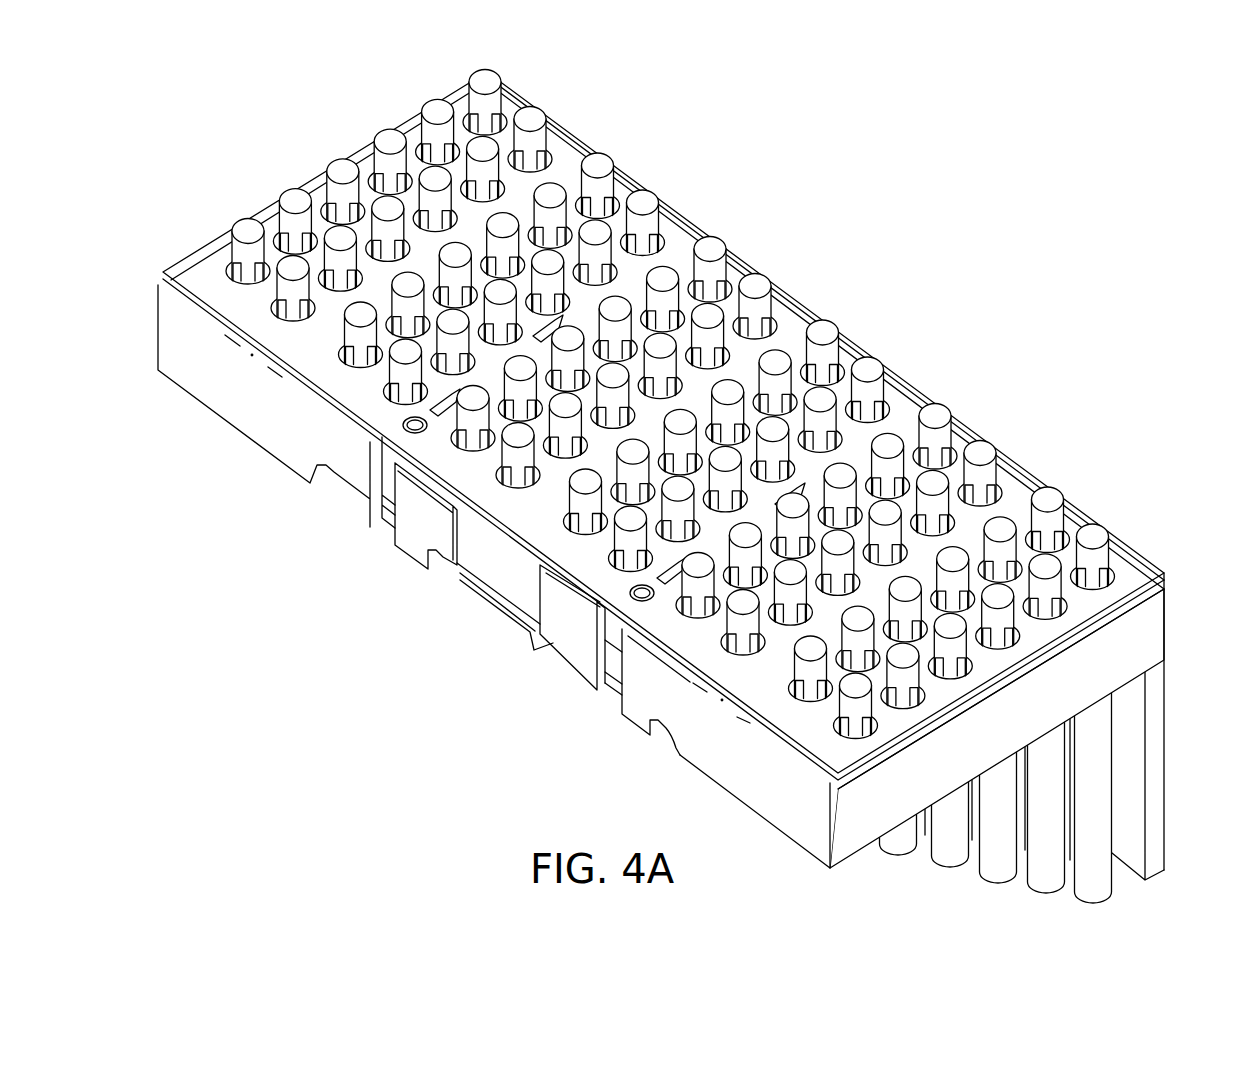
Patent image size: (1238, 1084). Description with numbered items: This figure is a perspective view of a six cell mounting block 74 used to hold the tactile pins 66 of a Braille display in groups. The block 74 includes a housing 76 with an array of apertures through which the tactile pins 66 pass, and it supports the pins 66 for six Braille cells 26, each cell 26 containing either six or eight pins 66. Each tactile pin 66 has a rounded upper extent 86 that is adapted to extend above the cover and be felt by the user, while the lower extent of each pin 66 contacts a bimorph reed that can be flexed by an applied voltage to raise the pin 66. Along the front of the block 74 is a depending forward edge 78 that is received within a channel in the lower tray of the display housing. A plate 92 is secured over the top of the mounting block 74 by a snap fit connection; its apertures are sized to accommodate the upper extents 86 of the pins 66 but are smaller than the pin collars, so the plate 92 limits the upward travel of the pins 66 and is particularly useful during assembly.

The mounting block 74 is at (691, 487).
The Braille cell 26 is at (716, 403).
The rounded upper extent 86 is at (485, 84).
The housing 76 is at (1147, 630).
The depending forward edge 78 is at (1157, 745).
The tactile pins 66 is at (1000, 788).
The plate 92 is at (840, 753).